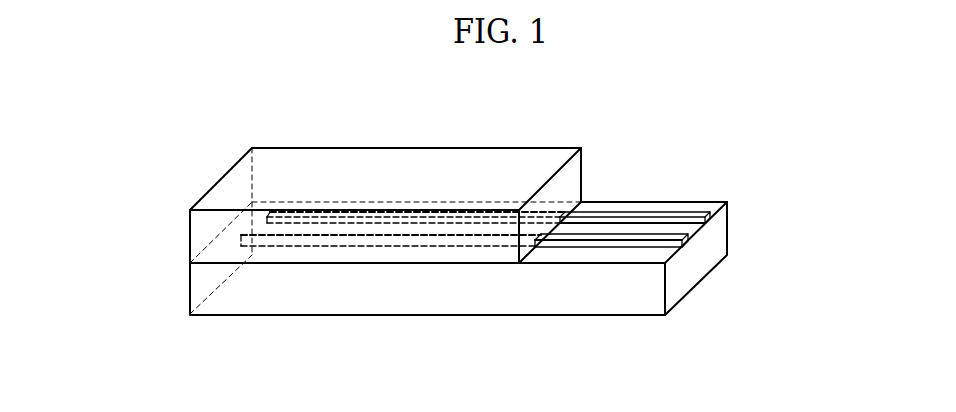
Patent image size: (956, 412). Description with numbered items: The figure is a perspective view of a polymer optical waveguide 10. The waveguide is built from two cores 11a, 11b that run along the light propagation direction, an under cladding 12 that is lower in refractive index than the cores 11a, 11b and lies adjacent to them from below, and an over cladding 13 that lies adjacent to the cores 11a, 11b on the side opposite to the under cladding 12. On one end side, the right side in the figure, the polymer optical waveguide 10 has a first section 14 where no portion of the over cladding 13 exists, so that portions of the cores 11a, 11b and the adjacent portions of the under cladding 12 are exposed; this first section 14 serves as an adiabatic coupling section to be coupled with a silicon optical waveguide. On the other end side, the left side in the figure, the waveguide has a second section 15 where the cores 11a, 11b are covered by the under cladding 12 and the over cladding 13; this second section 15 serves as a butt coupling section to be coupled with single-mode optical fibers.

The polymer optical waveguide 10 is at (592, 108).
The core 11a is at (660, 238).
The core 11b is at (686, 221).
The under cladding 12 is at (728, 228).
The over cladding 13 is at (410, 147).
The first section 14 is at (648, 181).
The second section 15 is at (302, 147).